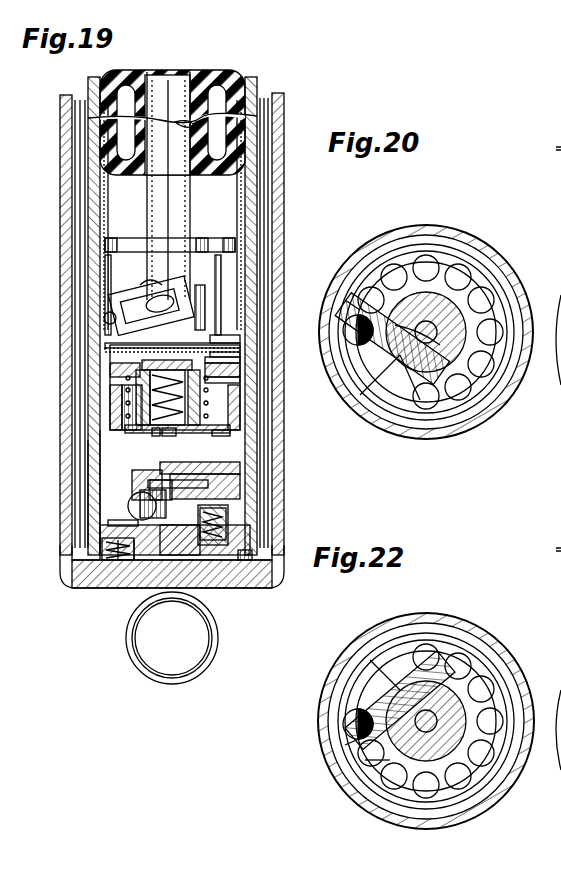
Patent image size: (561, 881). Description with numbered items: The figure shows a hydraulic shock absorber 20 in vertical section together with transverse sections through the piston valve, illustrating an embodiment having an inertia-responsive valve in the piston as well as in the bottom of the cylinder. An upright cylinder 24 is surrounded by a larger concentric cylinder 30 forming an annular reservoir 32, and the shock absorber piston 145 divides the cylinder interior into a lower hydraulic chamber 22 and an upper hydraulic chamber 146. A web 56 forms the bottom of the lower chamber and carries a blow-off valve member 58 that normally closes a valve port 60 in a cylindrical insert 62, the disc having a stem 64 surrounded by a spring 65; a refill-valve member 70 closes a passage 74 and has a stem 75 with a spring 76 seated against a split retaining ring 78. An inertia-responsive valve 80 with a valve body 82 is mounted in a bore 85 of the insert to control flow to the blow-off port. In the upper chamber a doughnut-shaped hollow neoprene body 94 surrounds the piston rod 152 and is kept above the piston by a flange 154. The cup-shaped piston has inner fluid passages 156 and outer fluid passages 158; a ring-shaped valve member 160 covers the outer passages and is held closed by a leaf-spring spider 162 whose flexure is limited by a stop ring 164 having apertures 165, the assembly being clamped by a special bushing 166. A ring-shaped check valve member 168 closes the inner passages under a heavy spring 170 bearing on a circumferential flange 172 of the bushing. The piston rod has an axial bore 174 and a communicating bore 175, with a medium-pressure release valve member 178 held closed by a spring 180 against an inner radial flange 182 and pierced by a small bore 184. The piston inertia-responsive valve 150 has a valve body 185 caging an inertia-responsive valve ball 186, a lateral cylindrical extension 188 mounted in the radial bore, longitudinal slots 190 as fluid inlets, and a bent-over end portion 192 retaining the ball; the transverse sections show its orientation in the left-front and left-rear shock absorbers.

In FIG. 19, the hydraulic shock absorber 20 is at (55, 155).
In FIG. 19, the hydraulic chamber 22 is at (95, 448).
In FIG. 19, the cylinder 24 is at (88, 437).
In FIG. 20, the cylinder 24 is at (440, 228).
In FIG. 22, the cylinder 24 is at (468, 625).
In FIG. 19, the concentric cylinder 30 is at (62, 243).
In FIG. 19, the annular reservoir 32 is at (70, 472).
In FIG. 19, the web 56 is at (185, 588).
In FIG. 19, the blow-off valve member 58 is at (225, 505).
In FIG. 19, the valve port 60 is at (210, 465).
In FIG. 19, the cylindrical insert 62 is at (238, 478).
In FIG. 19, the stem 64 is at (230, 515).
In FIG. 19, the spring 65 is at (240, 588).
In FIG. 19, the refill-valve member 70 is at (128, 520).
In FIG. 19, the passage 74 is at (100, 552).
In FIG. 19, the stem 75 is at (118, 568).
In FIG. 19, the spring 76 is at (100, 570).
In FIG. 19, the split retaining ring 78 is at (130, 568).
In FIG. 19, the inertia-responsive valve 80 is at (140, 470).
In FIG. 19, the valve body 82 is at (135, 495).
In FIG. 19, the bore 85 is at (300, 440).
In FIG. 19, the doughnut-shaped hollow neoprene body 94 is at (240, 134).
In FIG. 19, the shock absorber piston 145 is at (240, 392).
In FIG. 19, the upper hydraulic chamber 146 is at (238, 282).
In FIG. 19, the inertia-responsive valve 150 is at (120, 330).
In FIG. 20, the inertia-responsive valve 150 is at (368, 400).
In FIG. 22, the inertia-responsive valve 150 is at (350, 705).
In FIG. 19, the piston rod 152 is at (182, 202).
In FIG. 20, the piston rod 152 is at (418, 260).
In FIG. 22, the piston rod 152 is at (455, 700).
In FIG. 19, the flange 154 is at (232, 238).
In FIG. 19, the inner fluid passages 156 is at (236, 380).
In FIG. 19, the outer fluid passages 158 is at (236, 368).
In FIG. 19, the ring-shaped valve member 160 is at (232, 358).
In FIG. 19, the leaf-spring spider 162 is at (232, 350).
In FIG. 19, the stop ring 164 is at (232, 340).
In FIG. 20, the stop ring 164 is at (492, 290).
In FIG. 22, the stop ring 164 is at (480, 775).
In FIG. 19, the apertures 165 is at (232, 330).
In FIG. 20, the apertures 165 is at (478, 265).
In FIG. 22, the apertures 165 is at (480, 680).
In FIG. 19, the special bushing 166 is at (240, 425).
In FIG. 19, the ring-shaped check valve member 168 is at (115, 383).
In FIG. 19, the spring 170 is at (135, 409).
In FIG. 19, the circumferential flange 172 is at (230, 435).
In FIG. 19, the axial bore 174 is at (200, 295).
In FIG. 20, the axial bore 174 is at (448, 360).
In FIG. 22, the axial bore 174 is at (440, 760).
In FIG. 20, the communicating bore 175 is at (350, 290).
In FIG. 22, the communicating bore 175 is at (400, 690).
In FIG. 19, the medium-pressure release valve member 178 is at (200, 390).
In FIG. 19, the spring 180 is at (172, 432).
In FIG. 19, the inner radial flange 182 is at (160, 432).
In FIG. 19, the bore 184 is at (238, 340).
In FIG. 19, the valve body 185 is at (140, 292).
In FIG. 20, the valve body 185 is at (375, 410).
In FIG. 19, the inertia-responsive valve ball 186 is at (108, 315).
In FIG. 20, the inertia-responsive valve ball 186 is at (340, 320).
In FIG. 22, the inertia-responsive valve ball 186 is at (345, 728).
In FIG. 20, the lateral cylindrical extension 188 is at (430, 385).
In FIG. 22, the lateral cylindrical extension 188 is at (360, 770).
In FIG. 20, the longitudinal slots 190 is at (410, 420).
In FIG. 22, the longitudinal slots 190 is at (370, 680).
In FIG. 20, the end portion 192 is at (352, 300).
In FIG. 22, the end portion 192 is at (355, 750).